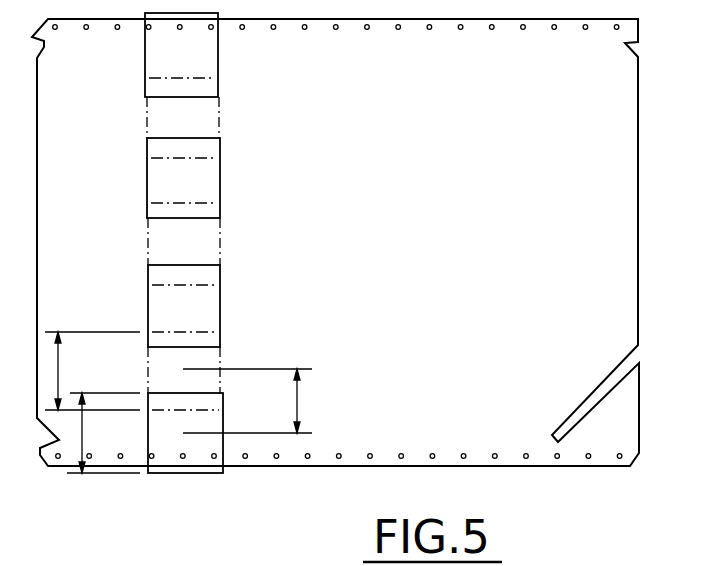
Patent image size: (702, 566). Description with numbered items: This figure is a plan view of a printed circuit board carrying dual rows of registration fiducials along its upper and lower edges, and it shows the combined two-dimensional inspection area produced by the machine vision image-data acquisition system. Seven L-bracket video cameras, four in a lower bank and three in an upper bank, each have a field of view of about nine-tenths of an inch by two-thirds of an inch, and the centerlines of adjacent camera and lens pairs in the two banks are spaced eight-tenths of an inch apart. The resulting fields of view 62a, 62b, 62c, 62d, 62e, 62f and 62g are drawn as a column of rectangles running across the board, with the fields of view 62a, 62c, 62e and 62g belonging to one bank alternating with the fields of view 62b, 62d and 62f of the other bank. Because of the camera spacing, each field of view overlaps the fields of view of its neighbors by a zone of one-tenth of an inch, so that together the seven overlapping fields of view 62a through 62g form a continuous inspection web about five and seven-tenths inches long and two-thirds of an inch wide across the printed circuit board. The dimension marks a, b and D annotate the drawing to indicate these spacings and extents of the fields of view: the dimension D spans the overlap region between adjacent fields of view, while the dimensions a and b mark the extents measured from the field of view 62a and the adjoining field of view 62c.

The field of view 62a is at (197, 447).
The field of view 62b is at (213, 360).
The field of view 62c is at (208, 298).
The field of view 62d is at (210, 242).
The field of view 62e is at (207, 170).
The field of view 62f is at (212, 112).
The field of view 62g is at (213, 62).
The dimension a is at (103, 433).
The dimension b is at (92, 371).
The dimension D is at (247, 401).